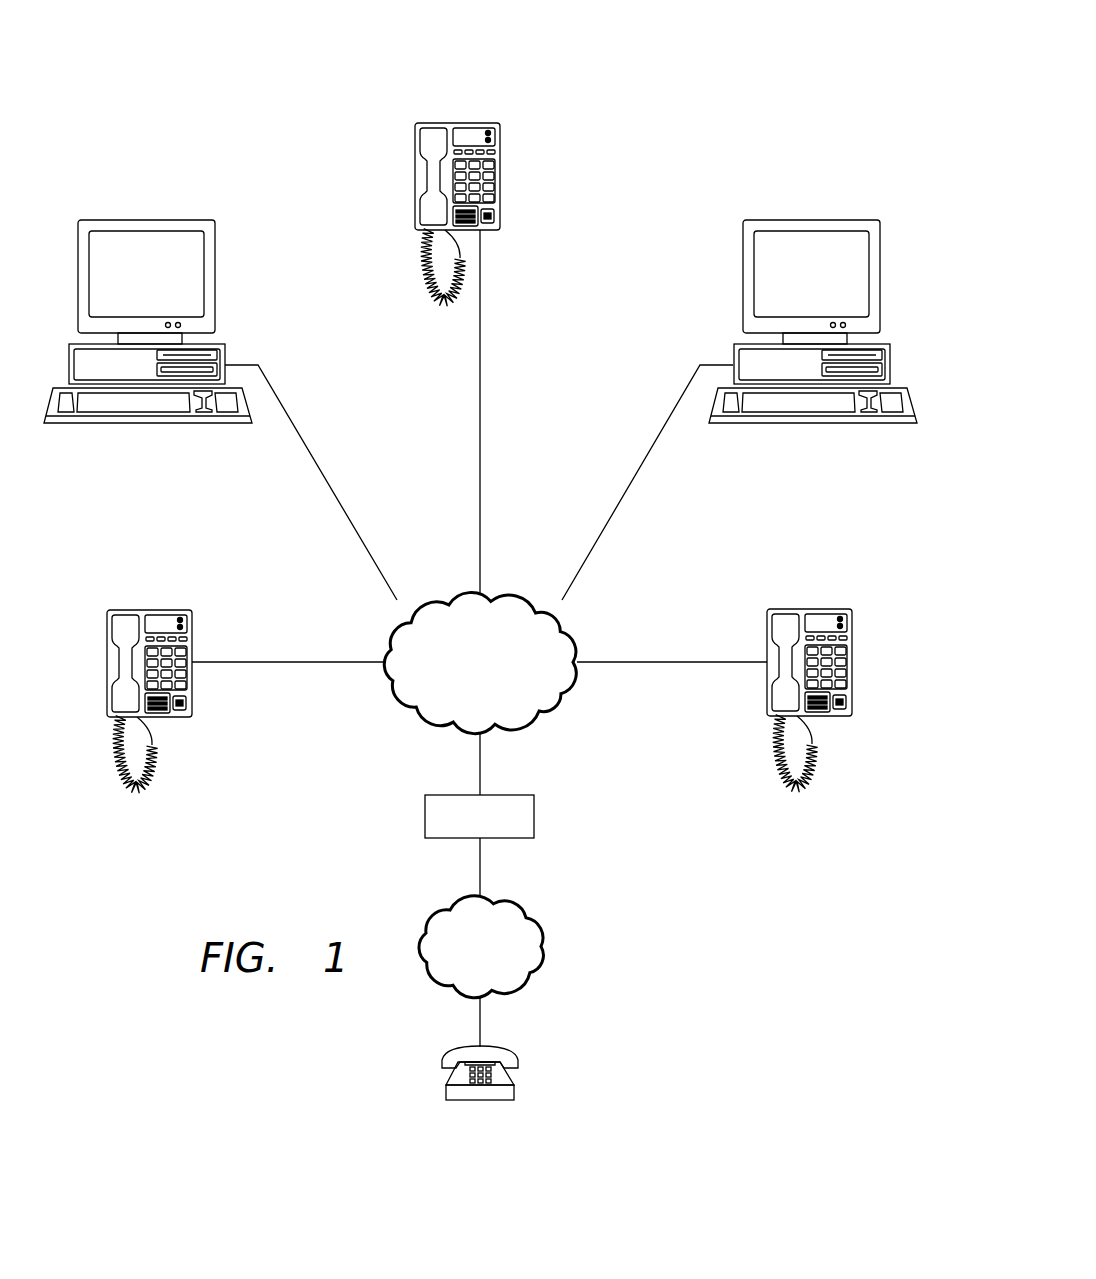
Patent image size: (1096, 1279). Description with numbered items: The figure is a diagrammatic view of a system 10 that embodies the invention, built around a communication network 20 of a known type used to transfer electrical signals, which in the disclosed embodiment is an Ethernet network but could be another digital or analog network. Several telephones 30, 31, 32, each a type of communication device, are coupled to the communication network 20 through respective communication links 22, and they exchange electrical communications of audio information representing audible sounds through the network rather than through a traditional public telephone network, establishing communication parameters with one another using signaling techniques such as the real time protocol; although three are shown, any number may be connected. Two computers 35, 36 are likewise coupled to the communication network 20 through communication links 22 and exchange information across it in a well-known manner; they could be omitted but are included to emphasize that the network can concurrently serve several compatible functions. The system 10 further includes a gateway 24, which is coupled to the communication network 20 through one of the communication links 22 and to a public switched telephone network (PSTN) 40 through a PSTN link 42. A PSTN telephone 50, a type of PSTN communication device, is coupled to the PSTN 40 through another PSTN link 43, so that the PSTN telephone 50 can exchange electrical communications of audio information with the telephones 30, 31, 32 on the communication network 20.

The system 10 is at (764, 54).
The communication network 20 is at (555, 718).
The communication links 22 is at (335, 492).
The gateway 24 is at (534, 815).
The telephone 30 is at (107, 680).
The telephone 31 is at (500, 160).
The telephone 32 is at (852, 668).
The computer 35 is at (138, 218).
The computer 36 is at (819, 218).
The public switched telephone network (PSTN) 40 is at (545, 948).
The PSTN link 42 is at (480, 862).
The PSTN link 43 is at (480, 1020).
The PSTN telephone 50 is at (485, 1100).